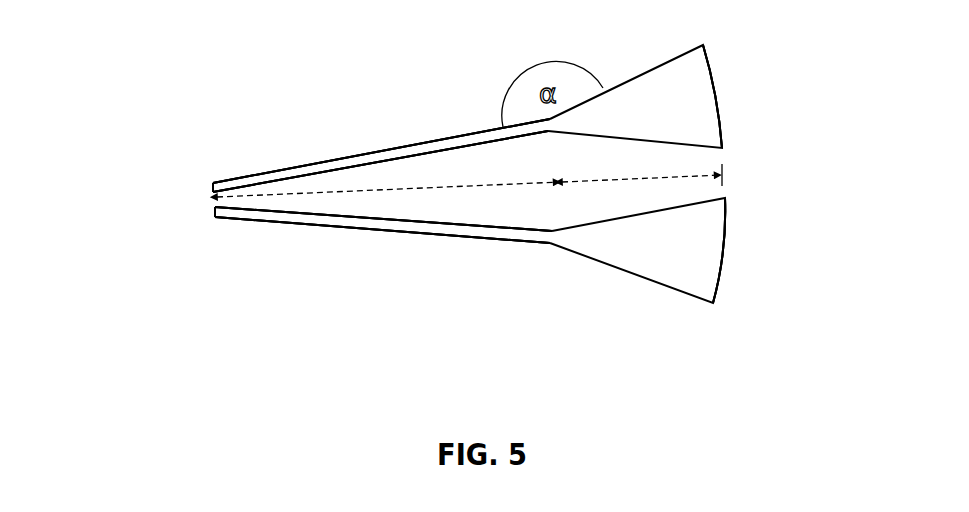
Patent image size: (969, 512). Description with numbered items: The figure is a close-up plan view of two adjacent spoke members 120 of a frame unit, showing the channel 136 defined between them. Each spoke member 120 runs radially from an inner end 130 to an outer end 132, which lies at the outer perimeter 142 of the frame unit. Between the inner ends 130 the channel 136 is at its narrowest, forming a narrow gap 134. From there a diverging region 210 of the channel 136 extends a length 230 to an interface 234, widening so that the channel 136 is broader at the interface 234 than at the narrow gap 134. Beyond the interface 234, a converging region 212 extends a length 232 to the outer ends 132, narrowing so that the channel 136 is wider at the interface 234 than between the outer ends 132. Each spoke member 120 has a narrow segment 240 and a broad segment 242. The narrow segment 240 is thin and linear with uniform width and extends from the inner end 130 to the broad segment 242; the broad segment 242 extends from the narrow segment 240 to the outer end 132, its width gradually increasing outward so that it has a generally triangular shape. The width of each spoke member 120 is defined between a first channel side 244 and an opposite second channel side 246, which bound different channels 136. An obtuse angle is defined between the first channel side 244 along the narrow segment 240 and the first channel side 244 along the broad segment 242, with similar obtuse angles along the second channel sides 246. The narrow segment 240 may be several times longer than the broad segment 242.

The spoke member 120 is at (297, 165).
The inner end 130 is at (213, 190).
The outer end 132 is at (713, 73).
The narrow gap 134 is at (213, 196).
The channel 136 is at (527, 208).
The outer perimeter 142 is at (728, 119).
The diverging region 210 is at (432, 171).
The converging region 212 is at (632, 193).
The length of diverging region 230 is at (395, 190).
The length of converging region 232 is at (590, 182).
The interface 234 is at (560, 183).
The narrow segment 240 is at (360, 158).
The broad segment 242 is at (662, 85).
The first channel side 244 is at (470, 135).
The second channel side 246 is at (475, 143).